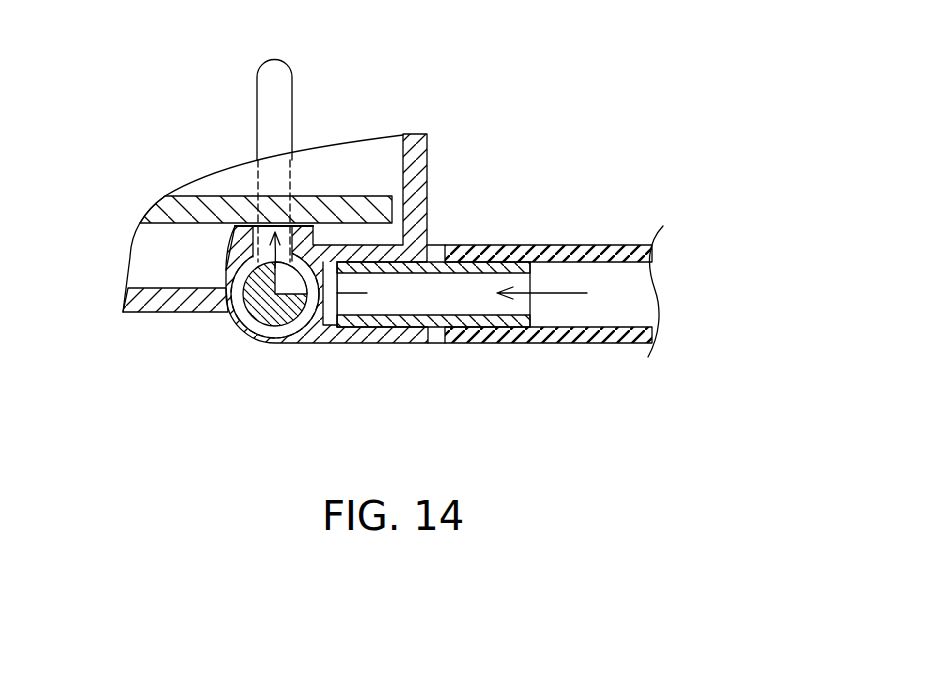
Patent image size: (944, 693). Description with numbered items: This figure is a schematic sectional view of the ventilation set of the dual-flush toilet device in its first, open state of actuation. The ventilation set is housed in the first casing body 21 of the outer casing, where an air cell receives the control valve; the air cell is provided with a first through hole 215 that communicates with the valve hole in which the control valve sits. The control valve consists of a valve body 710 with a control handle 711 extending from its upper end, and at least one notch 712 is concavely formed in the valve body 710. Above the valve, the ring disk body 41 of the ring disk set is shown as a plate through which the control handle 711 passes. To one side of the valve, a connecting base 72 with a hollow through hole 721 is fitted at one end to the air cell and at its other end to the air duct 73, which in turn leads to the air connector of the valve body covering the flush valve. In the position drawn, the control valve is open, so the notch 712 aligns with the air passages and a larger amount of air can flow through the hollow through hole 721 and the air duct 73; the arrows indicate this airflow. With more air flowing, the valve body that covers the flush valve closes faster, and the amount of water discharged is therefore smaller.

The first casing body 21 is at (160, 302).
The first through hole 215 is at (227, 238).
The ring disk body 41 is at (221, 197).
The control handle 711 is at (290, 95).
The notch 712 is at (296, 290).
The valve body 710 is at (268, 307).
The connecting base 72 is at (390, 318).
The hollow through hole 721 is at (373, 302).
The air duct 73 is at (575, 250).